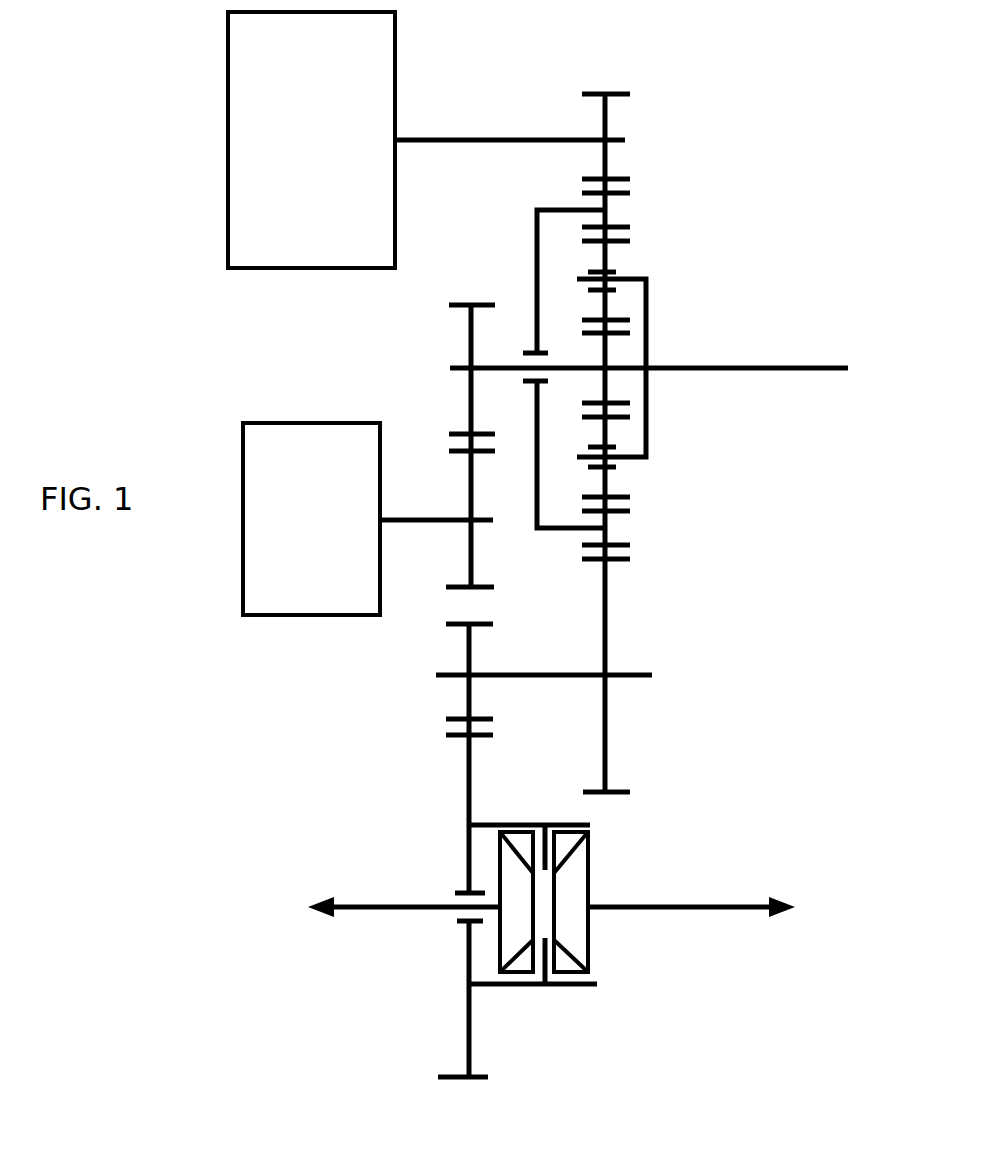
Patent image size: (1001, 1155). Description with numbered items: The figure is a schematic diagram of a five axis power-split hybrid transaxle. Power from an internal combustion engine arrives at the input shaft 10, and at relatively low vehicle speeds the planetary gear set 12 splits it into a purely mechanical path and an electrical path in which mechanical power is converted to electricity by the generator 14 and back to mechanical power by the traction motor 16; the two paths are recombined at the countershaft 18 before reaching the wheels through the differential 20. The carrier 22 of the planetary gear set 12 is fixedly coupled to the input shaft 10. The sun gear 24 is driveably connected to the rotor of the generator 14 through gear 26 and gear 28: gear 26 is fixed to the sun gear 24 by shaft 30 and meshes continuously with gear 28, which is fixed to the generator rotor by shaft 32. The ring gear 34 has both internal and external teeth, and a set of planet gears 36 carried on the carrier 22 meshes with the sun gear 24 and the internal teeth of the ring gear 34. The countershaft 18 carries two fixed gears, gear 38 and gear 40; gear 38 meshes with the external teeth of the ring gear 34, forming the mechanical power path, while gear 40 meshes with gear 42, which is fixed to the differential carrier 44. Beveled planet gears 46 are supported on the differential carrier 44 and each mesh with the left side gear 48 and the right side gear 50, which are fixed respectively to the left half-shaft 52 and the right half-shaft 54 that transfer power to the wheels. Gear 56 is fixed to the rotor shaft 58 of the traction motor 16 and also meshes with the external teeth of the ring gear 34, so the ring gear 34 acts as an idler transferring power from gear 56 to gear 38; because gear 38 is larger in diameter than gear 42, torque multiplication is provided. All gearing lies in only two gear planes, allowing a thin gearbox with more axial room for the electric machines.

The input shaft 10 is at (778, 370).
The planetary gear set 12 is at (683, 449).
The generator 14 is at (262, 618).
The traction motor 16 is at (397, 50).
The countershaft 18 is at (630, 672).
The differential 20 is at (623, 985).
The carrier 22 is at (650, 326).
The sun gear 24 is at (648, 385).
The gear 26 is at (470, 328).
The gear 28 is at (478, 566).
The shaft 30 is at (462, 372).
The shaft 32 is at (446, 523).
The ring gear 34 is at (535, 278).
The planet gears 36 is at (608, 252).
The gear 38 is at (607, 716).
The gear 40 is at (465, 696).
The gear 42 is at (465, 797).
The differential carrier 44 is at (487, 988).
The beveled planet gears 46 is at (520, 988).
The left side gear 48 is at (490, 928).
The right side gear 50 is at (580, 943).
The left half-shaft 52 is at (360, 900).
The right half-shaft 54 is at (680, 910).
The gear 56 is at (608, 160).
The rotor shaft 58 is at (483, 138).